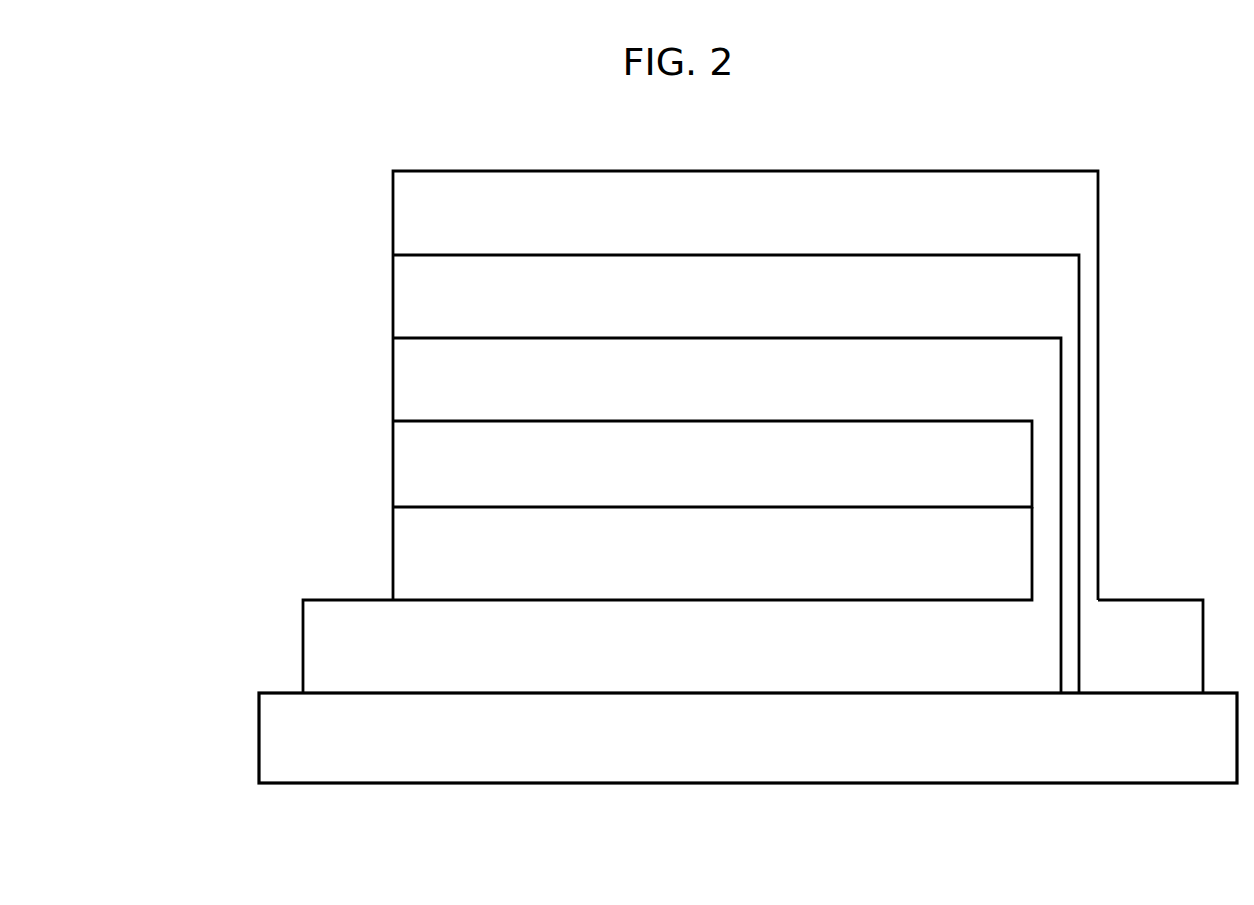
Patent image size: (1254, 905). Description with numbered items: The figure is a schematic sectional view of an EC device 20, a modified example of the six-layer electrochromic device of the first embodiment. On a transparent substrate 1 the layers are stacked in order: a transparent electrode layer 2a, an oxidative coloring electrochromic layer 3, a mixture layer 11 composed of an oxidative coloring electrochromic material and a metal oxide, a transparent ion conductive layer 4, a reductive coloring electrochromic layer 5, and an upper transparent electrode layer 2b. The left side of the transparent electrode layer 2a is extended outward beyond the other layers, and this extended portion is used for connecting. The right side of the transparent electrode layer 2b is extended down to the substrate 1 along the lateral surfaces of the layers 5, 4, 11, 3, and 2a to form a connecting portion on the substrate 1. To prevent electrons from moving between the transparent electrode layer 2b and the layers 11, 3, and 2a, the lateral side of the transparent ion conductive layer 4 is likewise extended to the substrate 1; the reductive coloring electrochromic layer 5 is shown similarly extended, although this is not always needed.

The EC device 20 is at (880, 147).
The transparent substrate 1 is at (275, 738).
The transparent electrode layer 2a is at (320, 637).
The oxidative coloring electrochromic layer 3 is at (415, 540).
The mixture layer 11 is at (415, 460).
The transparent ion conductive layer 4 is at (415, 375).
The reductive coloring electrochromic layer 5 is at (415, 296).
The transparent electrode layer 2b is at (417, 215).